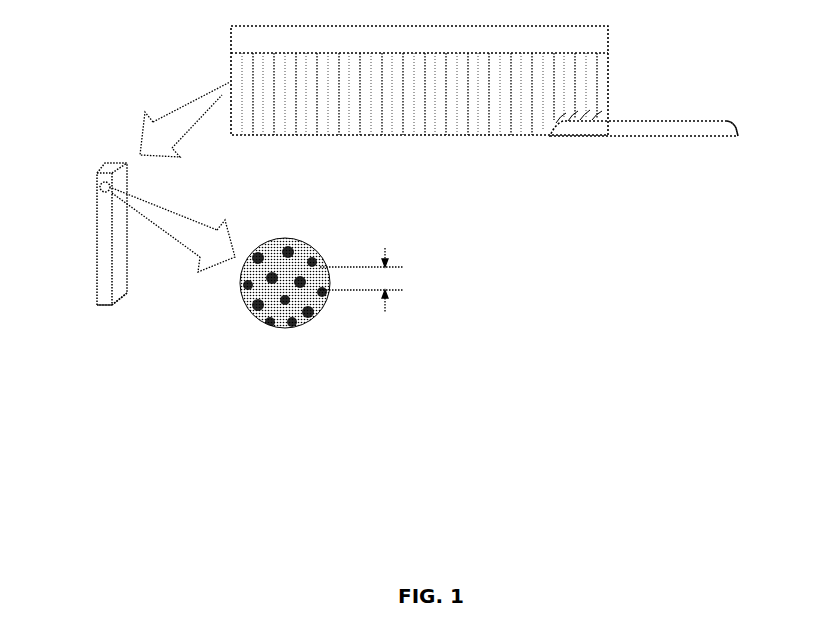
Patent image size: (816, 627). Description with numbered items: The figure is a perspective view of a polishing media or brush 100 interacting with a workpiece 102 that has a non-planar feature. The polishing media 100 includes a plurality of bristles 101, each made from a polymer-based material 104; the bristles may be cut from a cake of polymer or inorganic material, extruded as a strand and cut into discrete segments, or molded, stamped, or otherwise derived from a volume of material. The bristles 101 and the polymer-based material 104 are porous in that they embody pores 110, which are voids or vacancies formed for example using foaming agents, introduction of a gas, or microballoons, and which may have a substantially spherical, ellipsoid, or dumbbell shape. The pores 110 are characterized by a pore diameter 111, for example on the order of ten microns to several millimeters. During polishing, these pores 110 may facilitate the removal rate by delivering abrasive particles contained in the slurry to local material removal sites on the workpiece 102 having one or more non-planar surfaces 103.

The polishing media or brush 100 is at (430, 98).
The bristles 101 is at (97, 237).
The workpiece 102 is at (620, 137).
The non-planar surface 103 is at (739, 127).
The polymer-based material 104 is at (110, 304).
The pores 110 is at (318, 258).
The pore diameter 111 is at (385, 304).